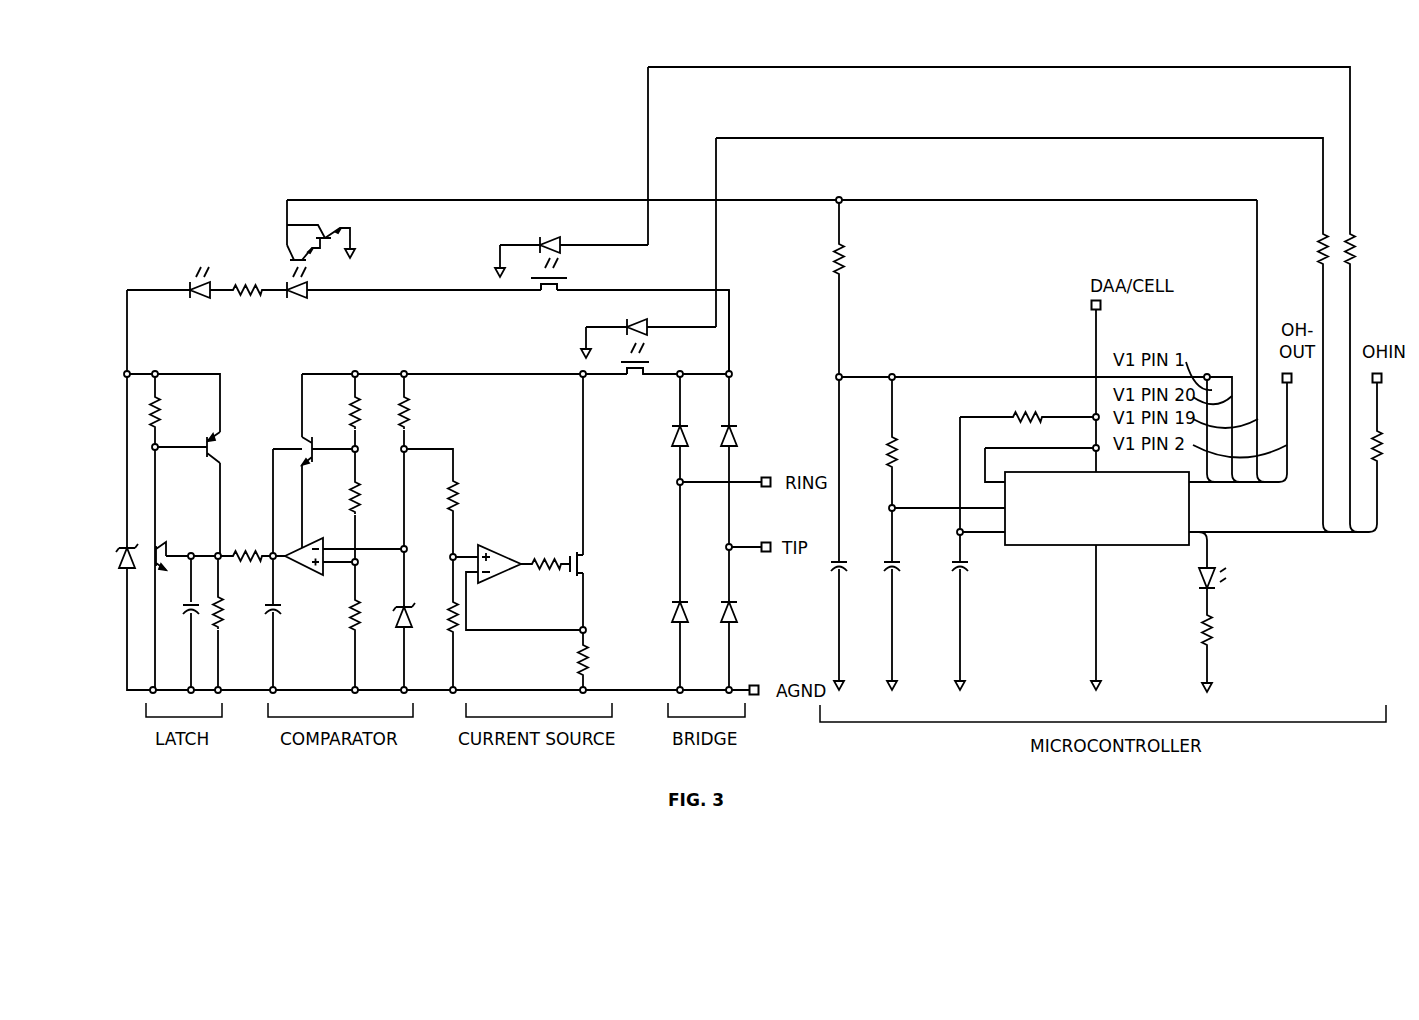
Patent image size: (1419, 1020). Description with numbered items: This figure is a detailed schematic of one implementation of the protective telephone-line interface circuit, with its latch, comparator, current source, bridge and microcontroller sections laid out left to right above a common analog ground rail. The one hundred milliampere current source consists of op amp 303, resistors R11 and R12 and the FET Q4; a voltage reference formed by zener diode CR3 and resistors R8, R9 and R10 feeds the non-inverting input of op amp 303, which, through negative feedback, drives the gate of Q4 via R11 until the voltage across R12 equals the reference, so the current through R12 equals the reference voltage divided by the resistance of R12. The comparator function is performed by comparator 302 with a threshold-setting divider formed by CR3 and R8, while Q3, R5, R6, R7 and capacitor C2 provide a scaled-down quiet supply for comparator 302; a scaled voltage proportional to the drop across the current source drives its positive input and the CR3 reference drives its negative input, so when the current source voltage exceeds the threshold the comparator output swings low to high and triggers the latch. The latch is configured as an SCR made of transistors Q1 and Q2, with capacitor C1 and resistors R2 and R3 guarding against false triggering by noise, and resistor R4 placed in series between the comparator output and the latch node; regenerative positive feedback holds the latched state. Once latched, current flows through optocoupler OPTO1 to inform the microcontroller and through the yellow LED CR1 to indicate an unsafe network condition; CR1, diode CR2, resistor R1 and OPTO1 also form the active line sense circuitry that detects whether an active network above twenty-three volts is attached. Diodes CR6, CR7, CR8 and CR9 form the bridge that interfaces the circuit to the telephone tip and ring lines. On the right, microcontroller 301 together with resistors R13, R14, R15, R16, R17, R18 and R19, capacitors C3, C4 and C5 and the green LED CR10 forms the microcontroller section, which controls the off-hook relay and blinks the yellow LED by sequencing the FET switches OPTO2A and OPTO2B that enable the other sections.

The microcontroller 301 is at (1013, 548).
The comparator 302 is at (314, 577).
The op amp 303 is at (511, 540).
The yellow LED CR1 is at (203, 299).
The line sense resistor R1 is at (247, 277).
The optocoupler OPTO1 is at (312, 278).
The FET switch OPTO2A is at (551, 252).
The FET switch OPTO2B is at (675, 346).
The line sense diode CR2 is at (118, 556).
The latch resistor R2 is at (175, 412).
The latch transistor Q1 is at (151, 556).
The latch transistor Q2 is at (232, 447).
The latch capacitor C1 is at (179, 615).
The latch resistor R3 is at (232, 619).
The resistor R4 is at (248, 544).
The supply capacitor C2 is at (289, 615).
The supply transistor Q3 is at (294, 440).
The supply resistor R7 is at (343, 412).
The reference resistor R8 is at (424, 412).
The supply resistor R6 is at (340, 497).
The supply resistor R5 is at (340, 615).
The reference diode CR3 is at (390, 629).
The reference resistor R9 is at (473, 496).
The reference resistor R10 is at (447, 614).
The current source resistor R11 is at (551, 578).
The FET Q4 is at (595, 564).
The current sense resistor R12 is at (609, 660).
The bridge diode CR6 is at (655, 436).
The bridge diode CR7 is at (659, 612).
The bridge diode CR8 is at (757, 436).
The bridge diode CR9 is at (757, 612).
The microcontroller section resistor R13 is at (864, 259).
The microcontroller section resistor R14 is at (919, 452).
The microcontroller section resistor R15 is at (1036, 404).
The microcontroller section capacitor C3 is at (854, 573).
The microcontroller section capacitor C4 is at (907, 573).
The microcontroller section capacitor C5 is at (976, 573).
The microcontroller section resistor R17 is at (1302, 249).
The microcontroller section resistor R18 is at (1377, 249).
The microcontroller section resistor R19 is at (1381, 464).
The diode CR10 is at (1230, 581).
The microcontroller section resistor R16 is at (1230, 630).